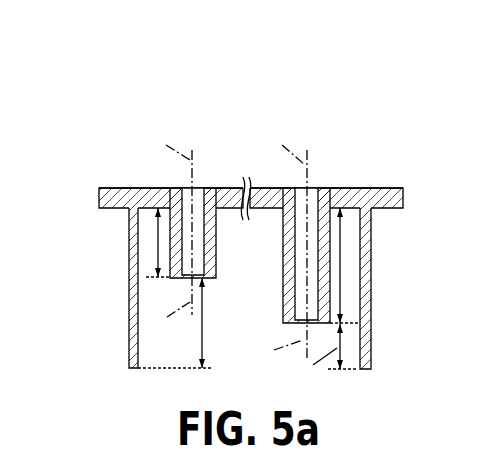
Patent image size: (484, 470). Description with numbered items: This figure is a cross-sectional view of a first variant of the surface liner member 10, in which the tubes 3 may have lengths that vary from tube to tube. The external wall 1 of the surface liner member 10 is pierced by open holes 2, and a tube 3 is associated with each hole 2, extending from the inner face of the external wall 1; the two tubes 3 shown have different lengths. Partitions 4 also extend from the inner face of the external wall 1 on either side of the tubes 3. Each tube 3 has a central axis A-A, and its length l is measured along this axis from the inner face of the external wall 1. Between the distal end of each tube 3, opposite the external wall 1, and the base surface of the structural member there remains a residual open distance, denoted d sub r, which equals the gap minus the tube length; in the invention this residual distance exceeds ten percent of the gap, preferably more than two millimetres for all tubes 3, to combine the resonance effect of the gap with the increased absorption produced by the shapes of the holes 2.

The surface liner member 10 is at (235, 226).
The external wall 1 is at (143, 188).
The open holes 2 is at (257, 223).
The tube 3 is at (217, 245).
The partition 4 is at (130, 283).